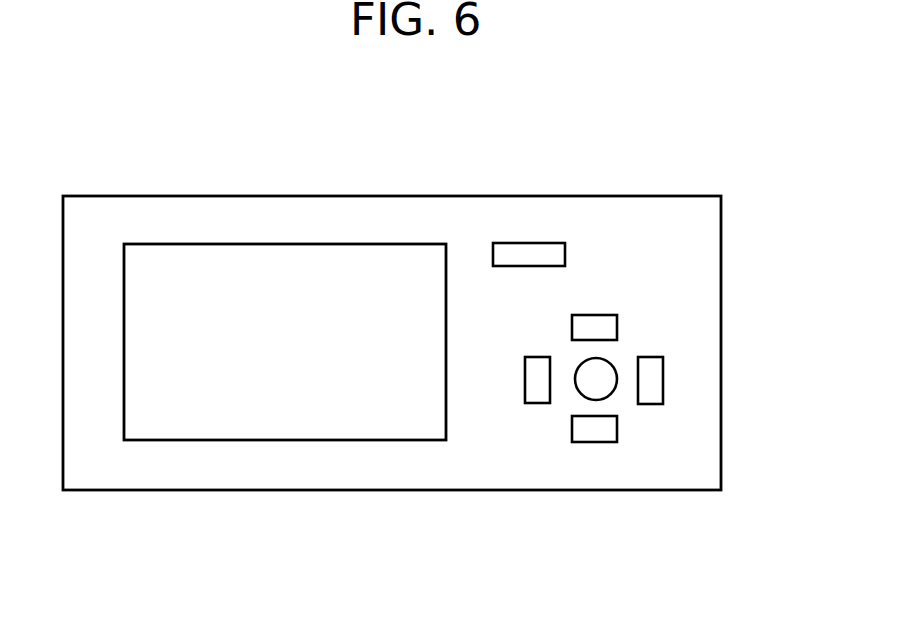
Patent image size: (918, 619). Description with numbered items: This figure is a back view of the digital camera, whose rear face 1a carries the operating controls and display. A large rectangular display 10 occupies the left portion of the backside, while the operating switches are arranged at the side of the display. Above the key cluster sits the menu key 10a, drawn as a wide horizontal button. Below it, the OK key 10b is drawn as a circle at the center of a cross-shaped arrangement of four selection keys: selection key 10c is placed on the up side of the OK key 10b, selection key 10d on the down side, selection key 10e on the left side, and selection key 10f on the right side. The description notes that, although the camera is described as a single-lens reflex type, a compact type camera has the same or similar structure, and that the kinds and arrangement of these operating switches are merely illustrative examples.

The housing front face 1a is at (118, 482).
The display unit 10 is at (162, 257).
The menu key 10a is at (540, 248).
The OK key 10b is at (598, 374).
The selection key 10c is at (598, 327).
The selection key 10d is at (597, 442).
The selection key 10e is at (533, 403).
The selection key 10f is at (663, 387).